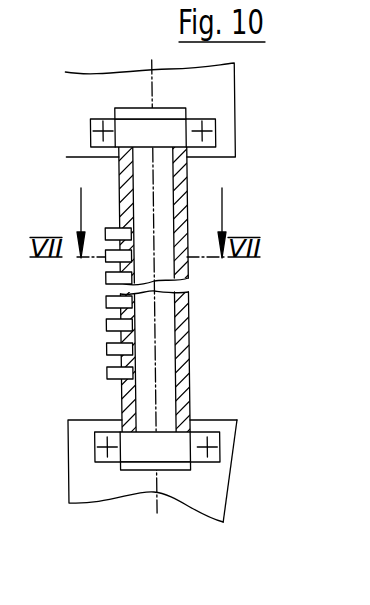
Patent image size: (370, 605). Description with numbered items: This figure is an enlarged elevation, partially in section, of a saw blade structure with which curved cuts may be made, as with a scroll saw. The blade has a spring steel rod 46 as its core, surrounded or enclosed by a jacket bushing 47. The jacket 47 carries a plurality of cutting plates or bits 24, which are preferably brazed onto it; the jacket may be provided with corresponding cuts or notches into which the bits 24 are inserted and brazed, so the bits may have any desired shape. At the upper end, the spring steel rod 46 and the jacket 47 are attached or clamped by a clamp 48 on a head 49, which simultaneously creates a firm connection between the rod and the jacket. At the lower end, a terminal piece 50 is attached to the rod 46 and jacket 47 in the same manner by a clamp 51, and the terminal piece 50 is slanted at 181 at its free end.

The head 49 is at (90, 97).
The clamp 48 is at (207, 120).
The jacket bushing 47 is at (182, 297).
The spring steel rod 46 is at (165, 382).
The cutting plates or bits 24 is at (115, 352).
The clamp 51 is at (117, 457).
The terminal piece 50 is at (182, 487).
The slant 181 is at (228, 497).